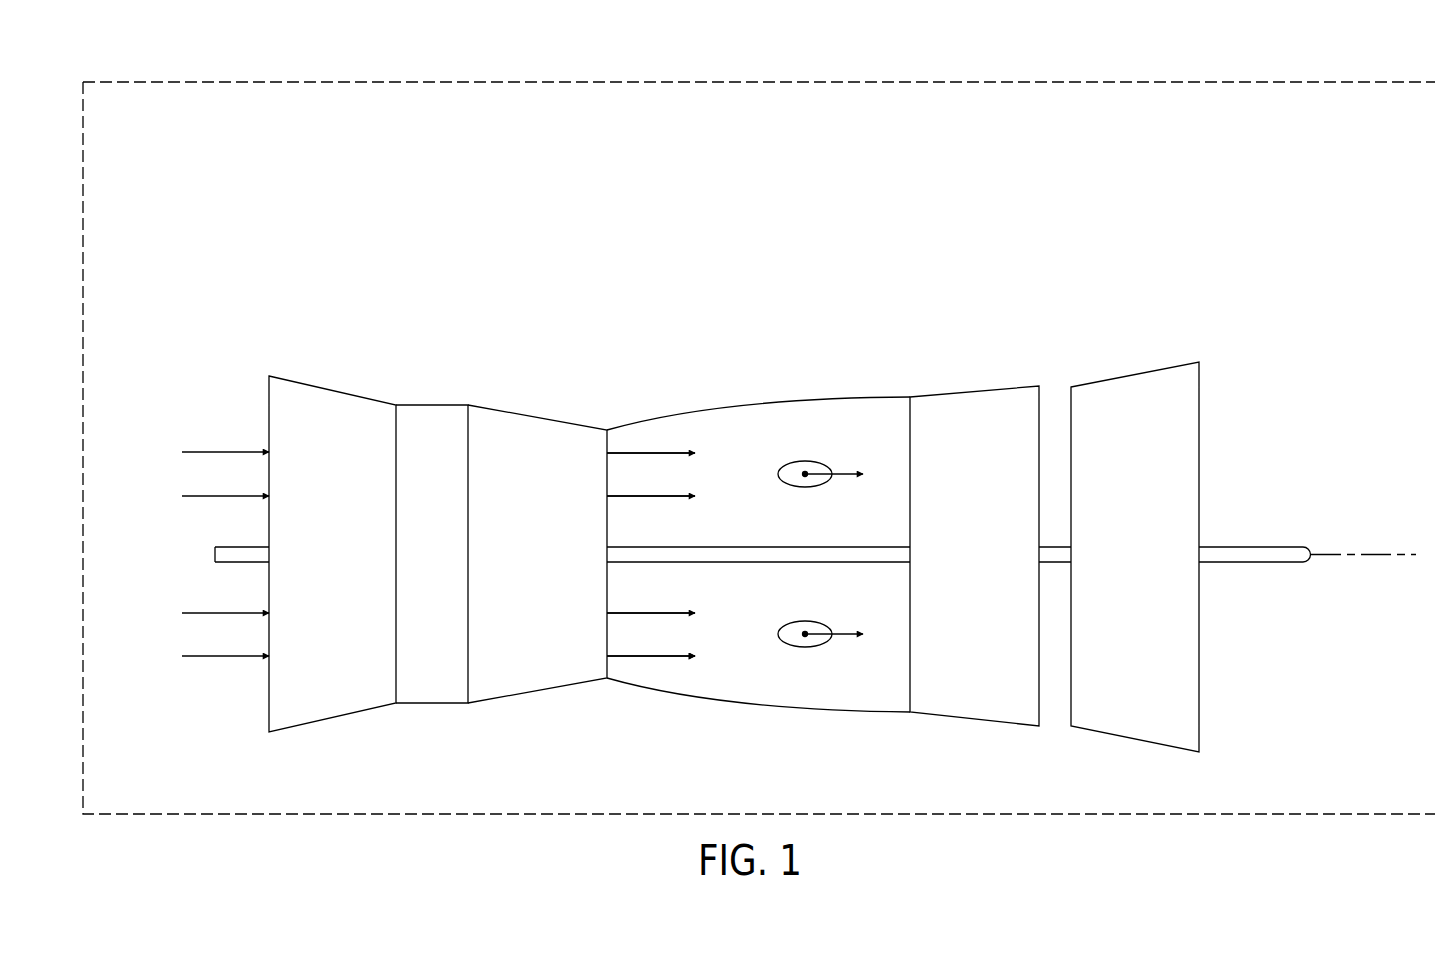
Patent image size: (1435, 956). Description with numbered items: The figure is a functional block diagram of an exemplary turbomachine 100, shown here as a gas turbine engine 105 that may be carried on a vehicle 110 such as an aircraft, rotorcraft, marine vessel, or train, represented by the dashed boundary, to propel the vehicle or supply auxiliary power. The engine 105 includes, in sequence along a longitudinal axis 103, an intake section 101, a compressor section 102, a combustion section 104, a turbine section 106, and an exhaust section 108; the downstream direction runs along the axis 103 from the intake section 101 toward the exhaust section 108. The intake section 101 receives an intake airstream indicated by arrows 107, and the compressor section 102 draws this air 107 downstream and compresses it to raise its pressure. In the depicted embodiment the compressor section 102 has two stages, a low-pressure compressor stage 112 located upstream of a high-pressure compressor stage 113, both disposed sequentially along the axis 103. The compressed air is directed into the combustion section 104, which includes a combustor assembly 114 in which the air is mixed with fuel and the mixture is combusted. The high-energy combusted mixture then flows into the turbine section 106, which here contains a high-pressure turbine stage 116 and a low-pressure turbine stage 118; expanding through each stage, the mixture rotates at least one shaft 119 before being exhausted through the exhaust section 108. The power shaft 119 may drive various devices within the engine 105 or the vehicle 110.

The turbomachine 100 is at (887, 192).
The intake section 101 is at (269, 273).
The compressor section 102 is at (397, 273).
The longitudinal axis 103 is at (1345, 552).
The combustion section 104 is at (608, 273).
The gas turbine engine 105 is at (540, 416).
The turbine section 106 is at (1197, 273).
The intake airstream 107 is at (180, 447).
The exhaust section 108 is at (1197, 273).
The vehicle 110 is at (490, 82).
The low-pressure compressor stage 112 is at (425, 687).
The high-pressure compressor stage 113 is at (515, 677).
The combustor assembly 114 is at (790, 465).
The high-pressure turbine stage 116 is at (970, 708).
The low-pressure turbine stage 118 is at (1133, 728).
The shaft 119 is at (1258, 545).